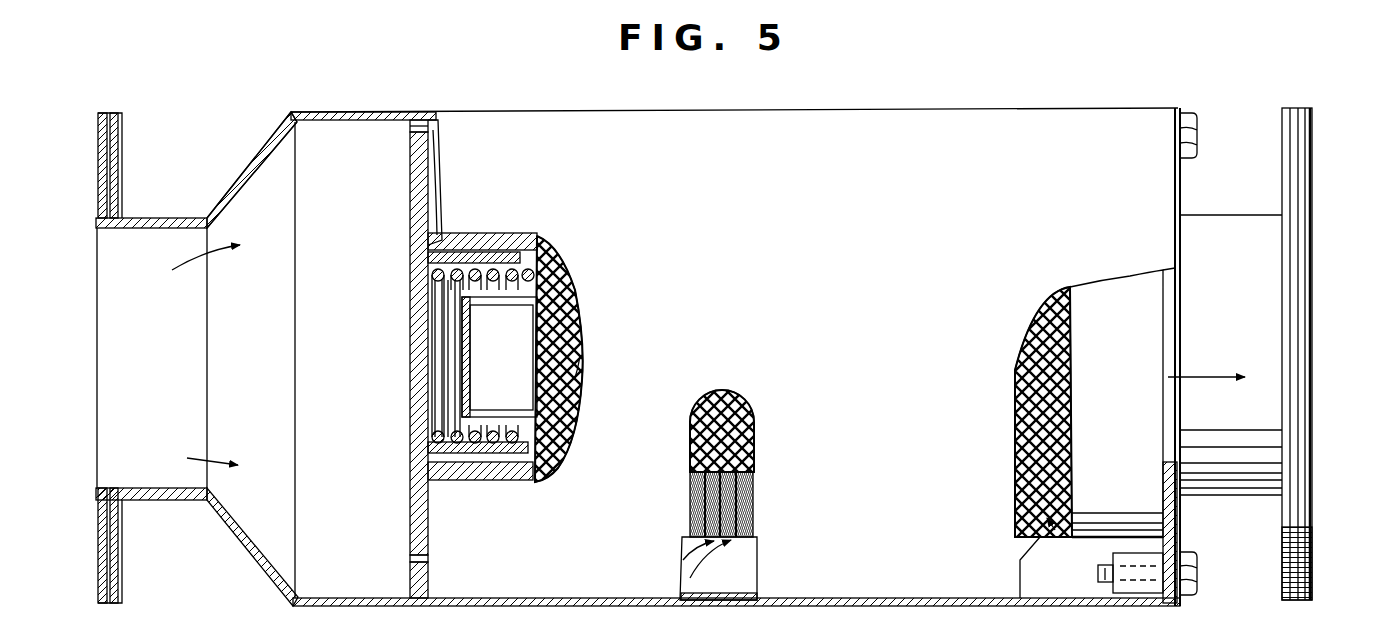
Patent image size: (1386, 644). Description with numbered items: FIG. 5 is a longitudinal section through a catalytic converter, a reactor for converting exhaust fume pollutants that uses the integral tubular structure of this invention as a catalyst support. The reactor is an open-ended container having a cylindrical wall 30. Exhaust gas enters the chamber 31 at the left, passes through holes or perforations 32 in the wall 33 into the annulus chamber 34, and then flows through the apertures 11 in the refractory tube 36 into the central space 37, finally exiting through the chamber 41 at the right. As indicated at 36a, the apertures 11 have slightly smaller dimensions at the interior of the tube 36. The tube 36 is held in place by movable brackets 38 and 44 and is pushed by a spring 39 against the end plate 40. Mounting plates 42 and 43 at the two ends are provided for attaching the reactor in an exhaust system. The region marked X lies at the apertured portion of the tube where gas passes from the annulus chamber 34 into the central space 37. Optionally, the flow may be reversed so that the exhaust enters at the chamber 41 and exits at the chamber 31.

The cylindrical wall 30 is at (1010, 108).
The chamber 31 is at (156, 362).
The holes or perforations 32 is at (424, 148).
The wall 33 is at (410, 487).
The annulus chamber 34 is at (437, 125).
The refractory tube 36 is at (573, 335).
The aperture interior portion 36a is at (700, 407).
The central space 37 is at (755, 404).
The movable bracket 38 is at (520, 305).
The spring 39 is at (452, 365).
The end plate 40 is at (1184, 194).
The chamber 41 is at (1246, 310).
The mounting plate 42 is at (124, 170).
The mounting plate 43 is at (1312, 546).
The movable bracket 44 is at (1126, 338).
The apertures 11 is at (749, 522).
The flow region X is at (690, 513).